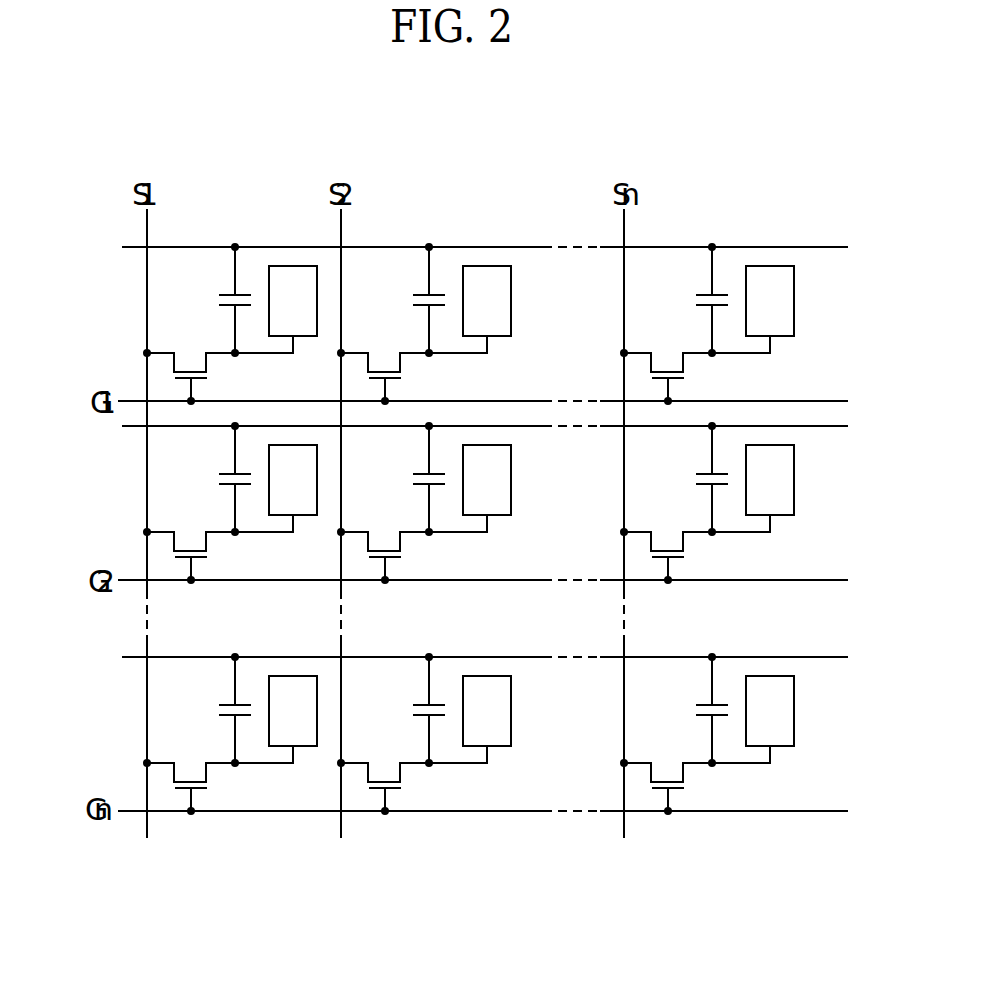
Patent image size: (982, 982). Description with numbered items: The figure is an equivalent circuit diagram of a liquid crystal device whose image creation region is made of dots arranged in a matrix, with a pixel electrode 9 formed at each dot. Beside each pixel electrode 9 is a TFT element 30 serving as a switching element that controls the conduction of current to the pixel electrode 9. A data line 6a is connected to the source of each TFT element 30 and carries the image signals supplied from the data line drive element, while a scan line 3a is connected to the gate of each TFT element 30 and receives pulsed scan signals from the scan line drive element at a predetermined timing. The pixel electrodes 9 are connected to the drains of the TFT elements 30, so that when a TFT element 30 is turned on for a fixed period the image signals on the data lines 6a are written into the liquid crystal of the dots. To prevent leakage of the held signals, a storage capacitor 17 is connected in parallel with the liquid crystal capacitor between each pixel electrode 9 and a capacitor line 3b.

The scan line 3a is at (135, 400).
The capacitor line 3b is at (130, 247).
The data line 6a is at (148, 228).
The storage capacitor 17 is at (205, 296).
The TFT element 30 is at (221, 374).
The pixel electrode 9 is at (299, 337).